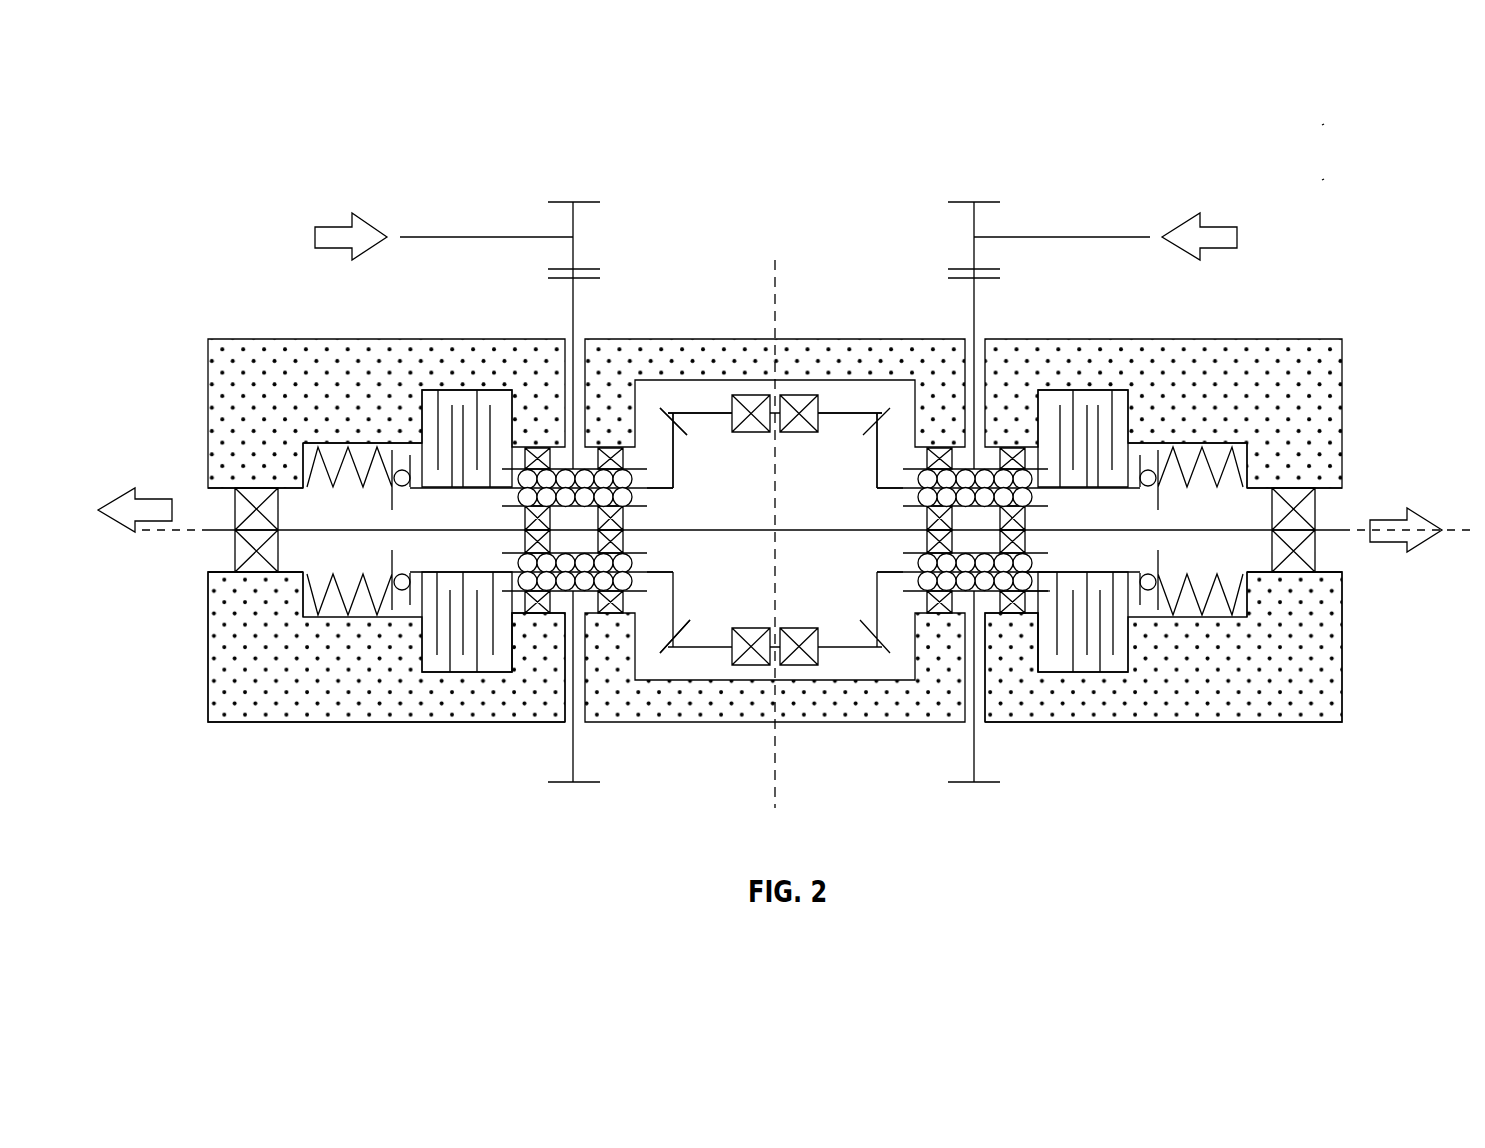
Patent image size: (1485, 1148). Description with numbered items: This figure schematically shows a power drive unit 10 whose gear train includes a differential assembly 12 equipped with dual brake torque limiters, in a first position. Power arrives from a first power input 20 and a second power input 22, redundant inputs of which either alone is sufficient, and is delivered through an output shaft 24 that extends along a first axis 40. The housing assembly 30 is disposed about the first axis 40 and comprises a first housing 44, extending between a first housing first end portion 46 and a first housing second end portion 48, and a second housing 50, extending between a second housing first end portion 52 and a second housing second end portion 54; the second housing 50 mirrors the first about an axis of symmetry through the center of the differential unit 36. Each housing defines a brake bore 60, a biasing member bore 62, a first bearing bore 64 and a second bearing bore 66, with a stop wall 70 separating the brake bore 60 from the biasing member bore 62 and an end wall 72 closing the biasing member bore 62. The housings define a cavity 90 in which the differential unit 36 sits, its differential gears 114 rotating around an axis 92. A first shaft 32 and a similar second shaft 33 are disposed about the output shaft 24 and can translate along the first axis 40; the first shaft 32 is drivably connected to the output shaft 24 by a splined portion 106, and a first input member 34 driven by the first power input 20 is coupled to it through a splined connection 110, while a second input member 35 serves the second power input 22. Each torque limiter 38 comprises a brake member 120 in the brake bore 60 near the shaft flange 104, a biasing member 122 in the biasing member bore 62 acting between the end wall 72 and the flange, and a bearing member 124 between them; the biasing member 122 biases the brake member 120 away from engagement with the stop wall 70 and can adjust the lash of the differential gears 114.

The power drive unit 10 is at (1324, 123).
The differential assembly 12 is at (1324, 178).
The first power input 20 is at (1217, 226).
The second power input 22 is at (335, 226).
The output shaft 24 is at (787, 527).
The housing assembly 30 is at (757, 247).
The first shaft 32 is at (886, 494).
The second shaft 33 is at (673, 494).
The first input member 34 is at (963, 307).
The second input member 35 is at (584, 303).
The differential unit 36 is at (791, 332).
The torque limiter 38 is at (430, 492).
The first axis 40 is at (1467, 540).
The first housing 44 is at (1203, 730).
The first housing first end portion 46 is at (1010, 700).
The first housing second end portion 48 is at (1310, 697).
The second housing 50 is at (370, 728).
The second housing first end portion 52 is at (537, 698).
The second housing second end portion 54 is at (250, 700).
The brake bore 60 is at (490, 397).
The biasing member bore 62 is at (340, 443).
The first bearing bore 64 is at (517, 450).
The second bearing bore 66 is at (222, 487).
The stop wall 70 is at (420, 413).
The end wall 72 is at (303, 463).
The cavity 90 is at (675, 667).
The axis 92 is at (773, 780).
The shaft flange 104 is at (1140, 455).
The splined portion 106 is at (943, 580).
The splined connection 110 is at (1037, 580).
The differential gears 114 is at (688, 437).
The brake member 120 is at (442, 400).
The biasing member 122 is at (348, 490).
The bearing member 124 is at (402, 494).